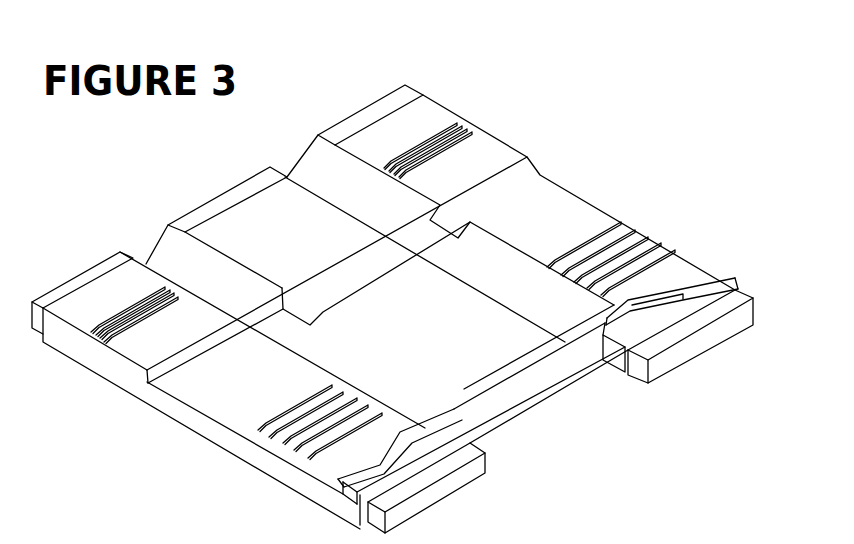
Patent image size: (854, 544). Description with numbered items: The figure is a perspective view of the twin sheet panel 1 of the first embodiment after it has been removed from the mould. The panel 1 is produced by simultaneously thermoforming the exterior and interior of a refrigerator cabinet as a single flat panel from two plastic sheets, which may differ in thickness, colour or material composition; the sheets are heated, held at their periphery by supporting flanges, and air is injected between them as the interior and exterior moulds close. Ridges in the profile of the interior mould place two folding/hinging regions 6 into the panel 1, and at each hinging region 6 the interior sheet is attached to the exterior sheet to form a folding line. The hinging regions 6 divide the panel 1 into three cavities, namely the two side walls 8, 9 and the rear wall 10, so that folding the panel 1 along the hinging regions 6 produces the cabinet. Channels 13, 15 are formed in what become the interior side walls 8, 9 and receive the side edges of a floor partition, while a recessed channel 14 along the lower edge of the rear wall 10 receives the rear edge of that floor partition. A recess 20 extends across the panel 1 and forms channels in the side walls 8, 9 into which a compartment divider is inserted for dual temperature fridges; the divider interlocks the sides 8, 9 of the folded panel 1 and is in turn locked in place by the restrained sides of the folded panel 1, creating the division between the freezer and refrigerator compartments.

The panel 1 is at (198, 202).
The folding/hinging regions 6 is at (497, 304).
The side wall 8 is at (321, 464).
The side wall 9 is at (693, 270).
The rear wall 10 is at (491, 367).
The channel 13 is at (399, 454).
The recessed channel 14 is at (497, 397).
The channel 15 is at (661, 307).
The recess 20 is at (453, 218).